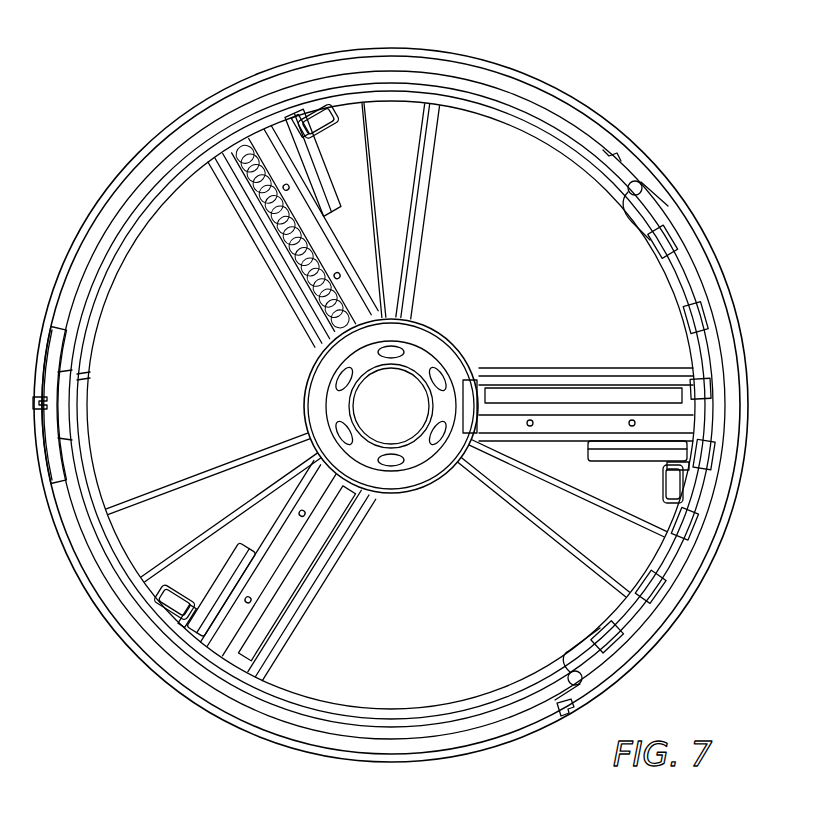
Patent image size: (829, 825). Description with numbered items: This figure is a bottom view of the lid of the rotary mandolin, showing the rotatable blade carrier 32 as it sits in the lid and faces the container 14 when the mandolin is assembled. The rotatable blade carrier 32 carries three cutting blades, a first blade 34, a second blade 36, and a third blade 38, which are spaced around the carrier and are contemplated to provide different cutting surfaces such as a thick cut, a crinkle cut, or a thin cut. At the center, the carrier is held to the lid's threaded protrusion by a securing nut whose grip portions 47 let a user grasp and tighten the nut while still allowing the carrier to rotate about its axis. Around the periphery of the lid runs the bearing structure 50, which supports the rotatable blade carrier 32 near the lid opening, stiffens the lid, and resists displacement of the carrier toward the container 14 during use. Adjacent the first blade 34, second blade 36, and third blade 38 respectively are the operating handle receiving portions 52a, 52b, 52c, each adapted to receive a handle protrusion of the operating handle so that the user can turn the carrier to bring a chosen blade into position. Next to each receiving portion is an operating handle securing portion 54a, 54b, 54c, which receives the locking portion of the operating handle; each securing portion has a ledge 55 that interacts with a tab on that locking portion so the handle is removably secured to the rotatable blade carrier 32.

The container 14 is at (692, 138).
The rotatable blade carrier 32 is at (507, 153).
The first blade 34 is at (680, 423).
The second blade 36 is at (230, 648).
The third blade 38 is at (260, 143).
The grip portions 47 is at (328, 393).
The bearing structure 50 is at (615, 685).
The operating handle receiving portion 52a is at (677, 458).
The operating handle receiving portion 52b is at (193, 638).
The operating handle receiving portion 52c is at (285, 118).
The operating handle securing portion 54a is at (672, 512).
The operating handle securing portion 54b is at (178, 608).
The operating handle securing portion 54c is at (315, 120).
The ledge 55 is at (320, 100).